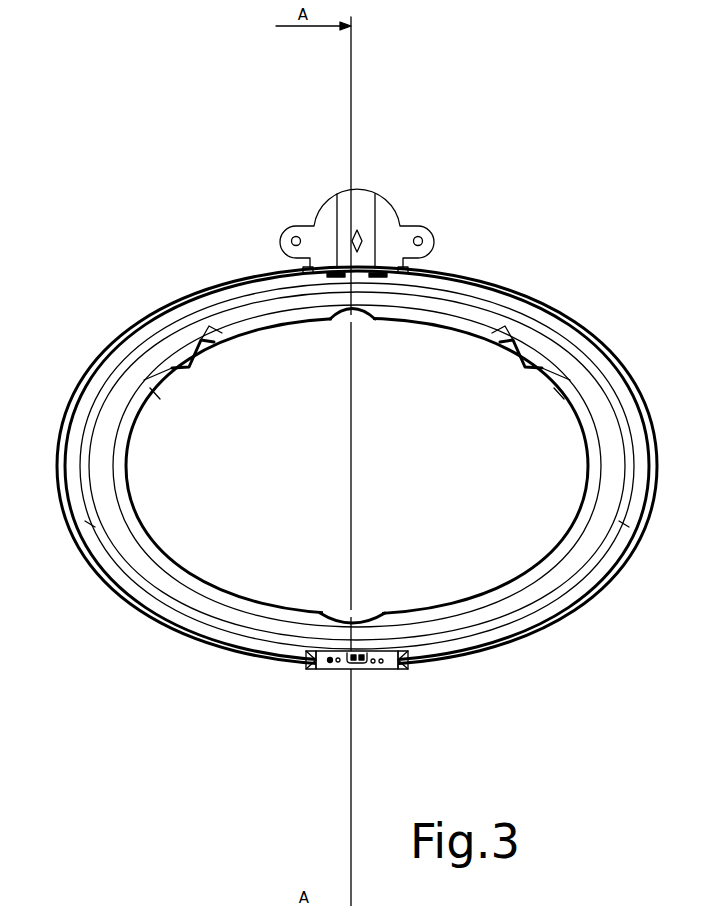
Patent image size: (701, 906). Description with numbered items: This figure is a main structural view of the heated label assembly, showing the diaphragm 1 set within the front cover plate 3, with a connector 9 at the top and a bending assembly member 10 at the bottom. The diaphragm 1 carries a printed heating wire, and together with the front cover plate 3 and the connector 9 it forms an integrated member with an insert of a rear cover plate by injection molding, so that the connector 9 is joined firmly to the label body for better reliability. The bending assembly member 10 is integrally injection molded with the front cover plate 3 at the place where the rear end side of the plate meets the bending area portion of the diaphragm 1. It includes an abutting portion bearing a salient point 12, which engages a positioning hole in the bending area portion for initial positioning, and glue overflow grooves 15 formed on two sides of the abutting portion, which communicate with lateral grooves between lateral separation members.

The diaphragm 1 is at (623, 570).
The front cover plate 3 is at (483, 607).
The connector 9 is at (362, 662).
The bending assembly member 10 is at (305, 672).
The salient point 12 is at (330, 662).
The glue overflow groove 15 is at (305, 660).